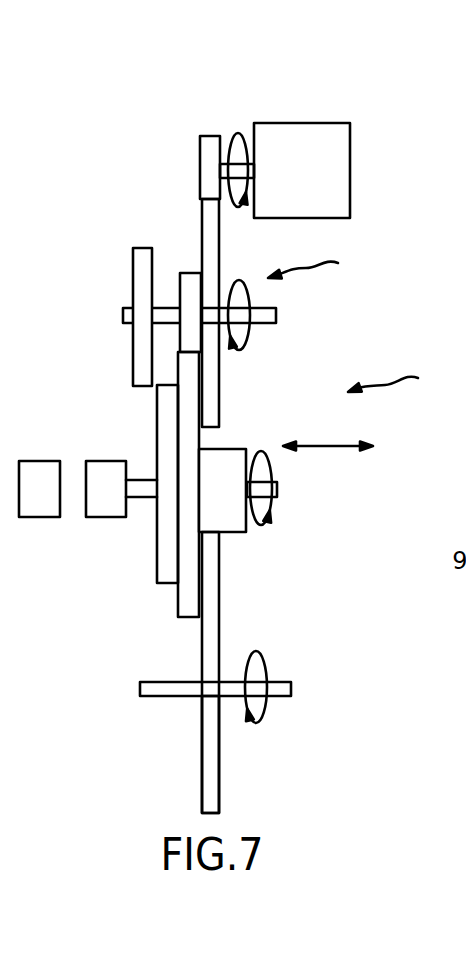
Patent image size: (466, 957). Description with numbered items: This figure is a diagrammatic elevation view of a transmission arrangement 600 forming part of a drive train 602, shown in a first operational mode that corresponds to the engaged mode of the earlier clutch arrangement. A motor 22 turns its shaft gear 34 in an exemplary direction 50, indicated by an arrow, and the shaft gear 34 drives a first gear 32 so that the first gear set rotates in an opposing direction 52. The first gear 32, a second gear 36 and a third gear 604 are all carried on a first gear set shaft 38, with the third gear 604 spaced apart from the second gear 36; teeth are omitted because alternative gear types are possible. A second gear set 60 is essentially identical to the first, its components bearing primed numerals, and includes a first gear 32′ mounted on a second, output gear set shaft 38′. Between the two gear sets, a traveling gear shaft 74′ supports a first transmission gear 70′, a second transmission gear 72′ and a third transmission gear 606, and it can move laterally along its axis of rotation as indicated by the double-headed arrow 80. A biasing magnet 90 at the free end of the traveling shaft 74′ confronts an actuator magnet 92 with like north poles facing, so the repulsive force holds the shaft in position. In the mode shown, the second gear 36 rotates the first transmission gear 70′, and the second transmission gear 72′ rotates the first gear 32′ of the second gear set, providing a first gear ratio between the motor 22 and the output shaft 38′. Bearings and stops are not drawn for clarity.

The motor 22 is at (290, 182).
The first gear 32 is at (220, 243).
The first gear of the second gear set 32′ is at (220, 773).
The shaft gear 34 is at (215, 136).
The second gear 36 is at (192, 273).
The first gear set shaft 38 is at (277, 316).
The second gear set shaft 38′ is at (292, 688).
The rotation direction 50 is at (237, 134).
The opposing rotation direction 52 is at (233, 342).
The second gear set 60 is at (234, 616).
The first transmission gear 70′ is at (200, 438).
The second transmission gear 72′ is at (229, 449).
The traveling gear shaft 74′ is at (278, 490).
The double-headed arrow 80 is at (325, 447).
The biasing magnet 90 is at (100, 518).
The actuator magnet 92 is at (40, 518).
The transmission arrangement 600 is at (405, 377).
The drive train 602 is at (326, 263).
The third gear 604 is at (143, 248).
The third transmission gear 606 is at (157, 421).